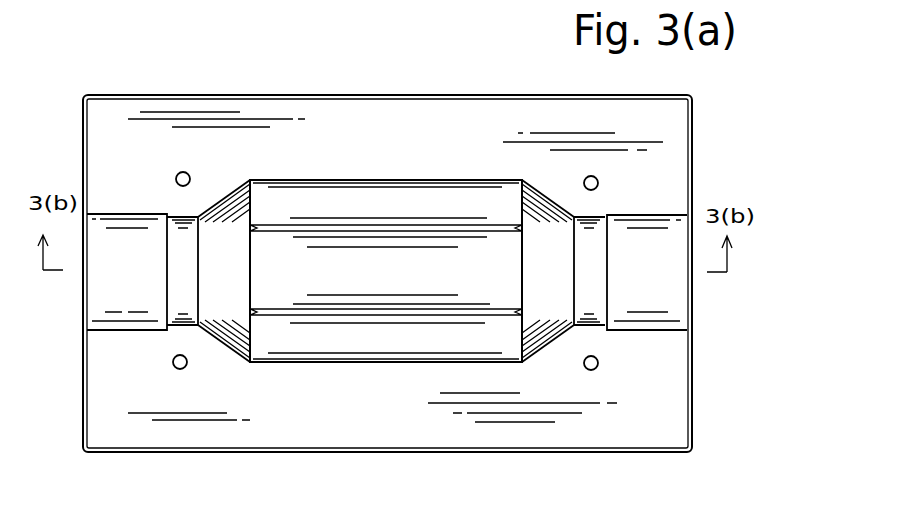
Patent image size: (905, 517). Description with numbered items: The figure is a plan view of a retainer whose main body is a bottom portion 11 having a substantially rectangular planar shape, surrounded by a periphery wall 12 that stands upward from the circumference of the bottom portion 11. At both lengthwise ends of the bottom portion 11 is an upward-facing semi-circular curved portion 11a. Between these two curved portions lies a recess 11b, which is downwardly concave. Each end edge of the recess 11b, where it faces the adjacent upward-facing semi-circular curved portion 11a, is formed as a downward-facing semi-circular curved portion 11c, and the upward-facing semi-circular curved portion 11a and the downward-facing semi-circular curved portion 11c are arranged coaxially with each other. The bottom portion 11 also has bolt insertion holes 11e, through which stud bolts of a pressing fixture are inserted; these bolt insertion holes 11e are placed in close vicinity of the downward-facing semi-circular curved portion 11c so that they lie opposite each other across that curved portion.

The bottom portion 11 is at (583, 430).
The upward-facing semi-circular curved portion 11a is at (123, 307).
The recess 11b is at (362, 340).
The downward-facing semi-circular curved portion 11c is at (198, 262).
The bolt insertion hole 11e is at (190, 177).
The periphery wall 12 is at (477, 95).